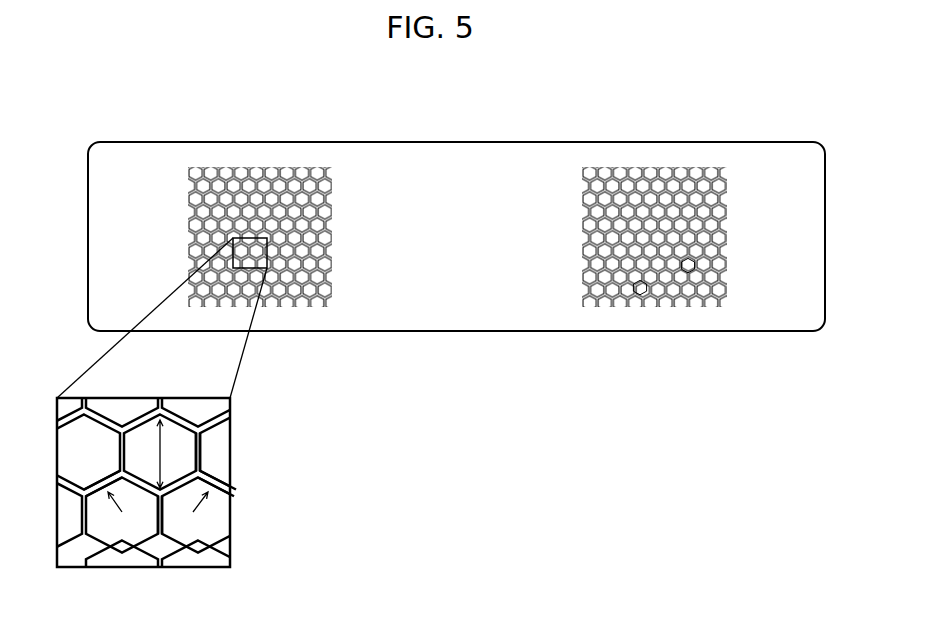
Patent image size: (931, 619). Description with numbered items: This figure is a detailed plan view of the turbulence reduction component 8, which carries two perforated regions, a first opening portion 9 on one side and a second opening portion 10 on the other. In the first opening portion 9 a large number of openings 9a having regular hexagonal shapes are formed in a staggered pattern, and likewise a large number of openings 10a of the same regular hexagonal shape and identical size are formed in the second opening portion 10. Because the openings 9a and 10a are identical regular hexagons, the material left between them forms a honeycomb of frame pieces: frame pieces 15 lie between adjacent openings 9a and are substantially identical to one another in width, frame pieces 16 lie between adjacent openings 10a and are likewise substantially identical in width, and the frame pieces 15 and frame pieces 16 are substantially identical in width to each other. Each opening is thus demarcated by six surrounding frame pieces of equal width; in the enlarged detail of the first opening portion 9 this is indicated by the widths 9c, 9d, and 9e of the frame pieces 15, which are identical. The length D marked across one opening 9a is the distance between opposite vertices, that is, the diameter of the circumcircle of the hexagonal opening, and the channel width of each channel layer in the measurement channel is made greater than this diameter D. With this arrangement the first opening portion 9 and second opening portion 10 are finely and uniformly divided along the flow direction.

The turbulence reduction component 8 is at (483, 287).
The first opening portion 9 is at (265, 167).
The opening 9a is at (178, 447).
The width 9c is at (96, 477).
The width 9d is at (218, 471).
The width 9e is at (193, 530).
The second opening portion 10 is at (658, 167).
The opening 10a is at (640, 287).
The frame piece 15 is at (198, 443).
The frame piece 16 is at (688, 265).
The length between opposite vertices D is at (152, 454).